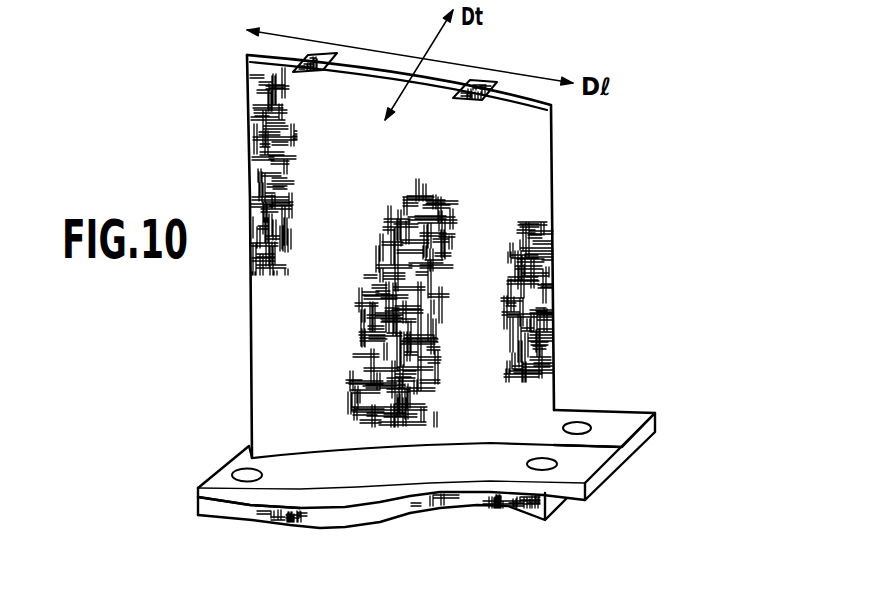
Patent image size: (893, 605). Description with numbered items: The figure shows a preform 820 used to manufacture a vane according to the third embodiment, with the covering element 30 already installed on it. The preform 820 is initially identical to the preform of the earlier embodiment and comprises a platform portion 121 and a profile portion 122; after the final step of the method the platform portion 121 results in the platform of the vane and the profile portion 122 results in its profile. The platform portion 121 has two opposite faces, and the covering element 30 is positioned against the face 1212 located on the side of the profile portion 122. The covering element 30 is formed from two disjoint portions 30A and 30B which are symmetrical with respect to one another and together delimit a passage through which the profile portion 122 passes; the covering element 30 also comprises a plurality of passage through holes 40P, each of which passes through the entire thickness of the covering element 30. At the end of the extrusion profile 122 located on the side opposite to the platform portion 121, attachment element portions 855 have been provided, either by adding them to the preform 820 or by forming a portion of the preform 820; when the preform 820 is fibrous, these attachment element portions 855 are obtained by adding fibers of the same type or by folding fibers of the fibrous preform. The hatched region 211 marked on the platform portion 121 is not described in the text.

The preform 820 is at (416, 255).
The profile portion 122 is at (310, 101).
The attachment element portions 855 is at (327, 73).
The passage through holes 40P is at (245, 468).
The covering element 30 is at (466, 443).
The first disjoint portion of the covering element 30A is at (582, 467).
The second disjoint portion of the covering element 30B is at (630, 420).
The platform portion 121 is at (360, 516).
The face of the platform portion 1212 is at (236, 505).
The hatched region 211 is at (443, 510).